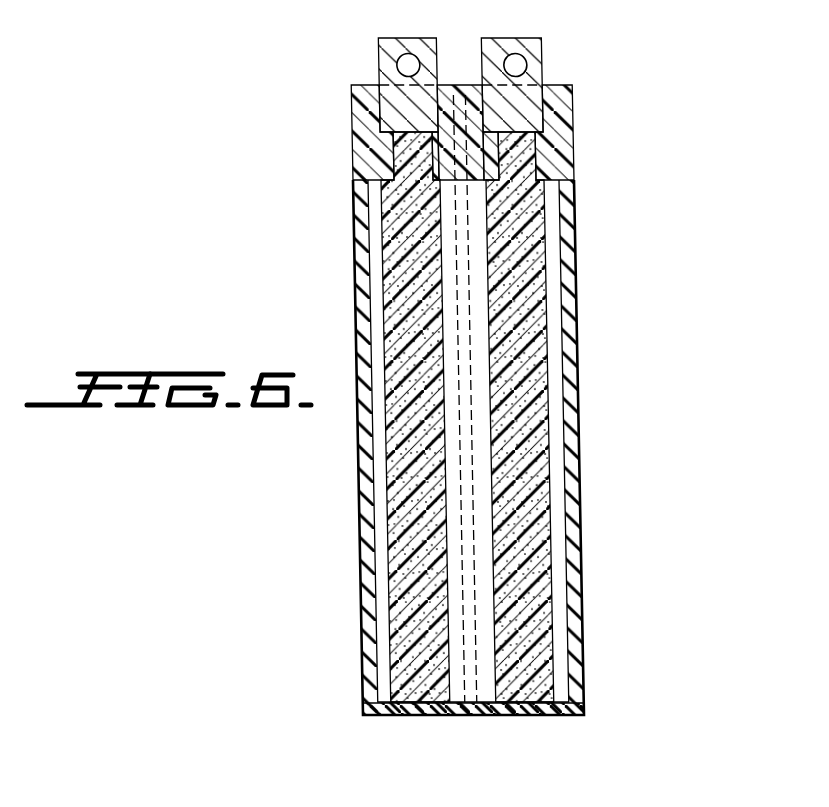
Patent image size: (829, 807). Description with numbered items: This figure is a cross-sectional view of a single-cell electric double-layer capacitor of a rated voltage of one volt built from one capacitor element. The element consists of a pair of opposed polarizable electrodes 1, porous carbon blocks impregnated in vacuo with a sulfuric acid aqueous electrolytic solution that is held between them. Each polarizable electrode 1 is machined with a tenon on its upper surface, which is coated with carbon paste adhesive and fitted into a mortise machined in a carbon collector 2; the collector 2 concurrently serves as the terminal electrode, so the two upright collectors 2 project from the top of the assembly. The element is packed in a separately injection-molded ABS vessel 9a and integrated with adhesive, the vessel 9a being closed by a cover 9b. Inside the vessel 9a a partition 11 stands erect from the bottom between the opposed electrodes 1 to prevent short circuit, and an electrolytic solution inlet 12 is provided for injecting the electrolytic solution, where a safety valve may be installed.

The polarizable electrodes 1 is at (392, 590).
The carbon collector 2 is at (495, 38).
The ABS vessel 9a is at (572, 464).
The casing cover 9b is at (554, 148).
The partition 11 is at (467, 342).
The electrolytic solution inlet 12 is at (477, 87).